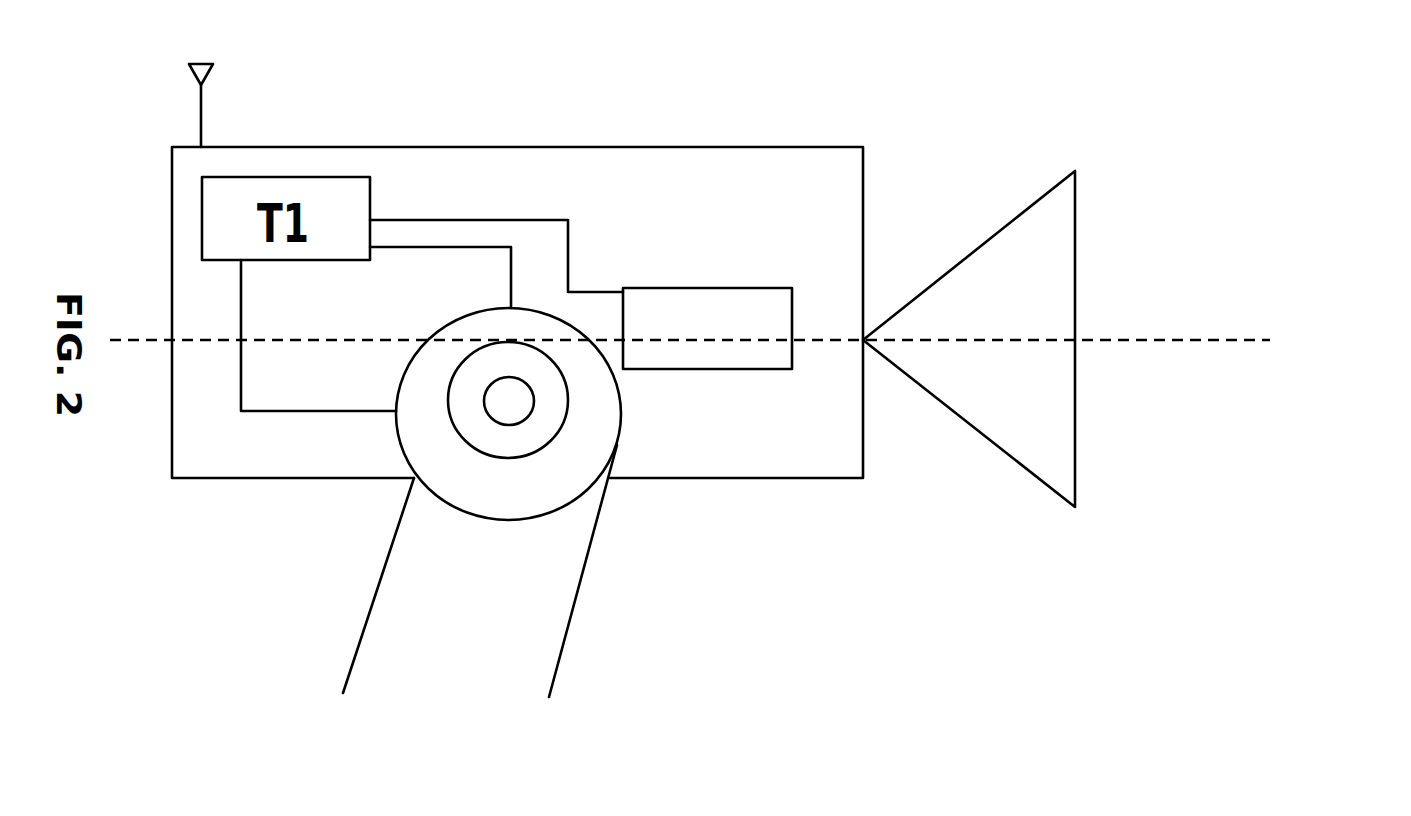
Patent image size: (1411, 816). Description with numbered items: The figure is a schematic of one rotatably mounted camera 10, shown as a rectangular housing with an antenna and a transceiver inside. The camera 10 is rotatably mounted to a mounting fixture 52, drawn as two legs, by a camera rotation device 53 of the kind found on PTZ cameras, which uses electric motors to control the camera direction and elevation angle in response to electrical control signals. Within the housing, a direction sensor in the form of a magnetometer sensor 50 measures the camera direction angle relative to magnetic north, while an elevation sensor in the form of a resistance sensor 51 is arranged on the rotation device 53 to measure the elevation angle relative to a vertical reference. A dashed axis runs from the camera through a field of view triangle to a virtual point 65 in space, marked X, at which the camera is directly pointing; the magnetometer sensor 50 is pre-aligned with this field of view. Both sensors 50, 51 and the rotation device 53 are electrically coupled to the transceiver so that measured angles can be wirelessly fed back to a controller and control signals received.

The camera 10 is at (863, 172).
The magnetometer sensor 50 is at (765, 369).
The resistance sensor 51 is at (560, 417).
The mounting fixture 52 is at (604, 514).
The camera rotation device 53 is at (505, 520).
The virtual point 65 is at (1308, 341).